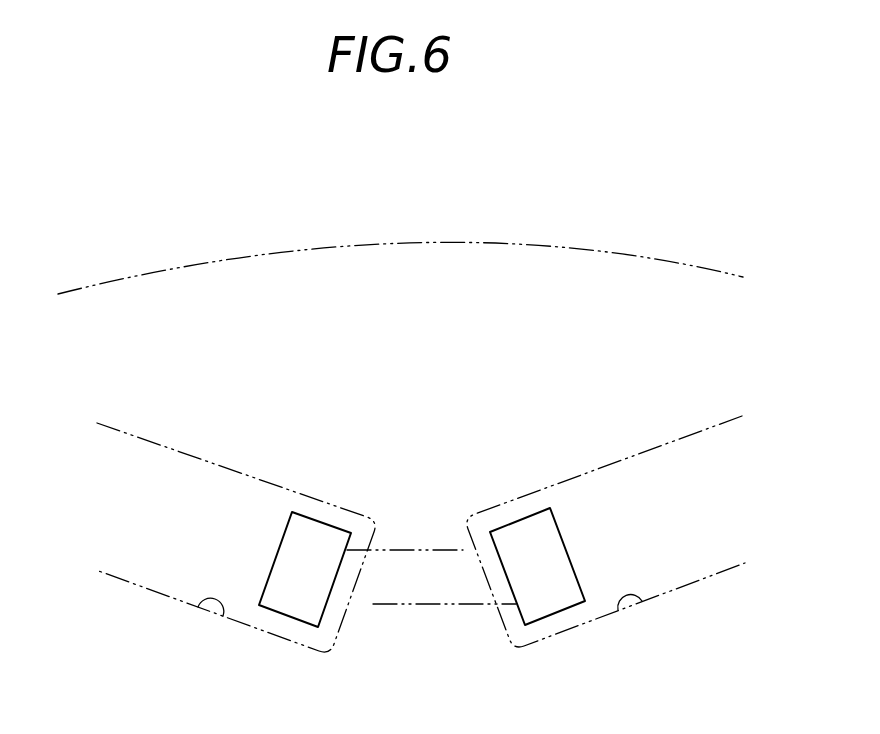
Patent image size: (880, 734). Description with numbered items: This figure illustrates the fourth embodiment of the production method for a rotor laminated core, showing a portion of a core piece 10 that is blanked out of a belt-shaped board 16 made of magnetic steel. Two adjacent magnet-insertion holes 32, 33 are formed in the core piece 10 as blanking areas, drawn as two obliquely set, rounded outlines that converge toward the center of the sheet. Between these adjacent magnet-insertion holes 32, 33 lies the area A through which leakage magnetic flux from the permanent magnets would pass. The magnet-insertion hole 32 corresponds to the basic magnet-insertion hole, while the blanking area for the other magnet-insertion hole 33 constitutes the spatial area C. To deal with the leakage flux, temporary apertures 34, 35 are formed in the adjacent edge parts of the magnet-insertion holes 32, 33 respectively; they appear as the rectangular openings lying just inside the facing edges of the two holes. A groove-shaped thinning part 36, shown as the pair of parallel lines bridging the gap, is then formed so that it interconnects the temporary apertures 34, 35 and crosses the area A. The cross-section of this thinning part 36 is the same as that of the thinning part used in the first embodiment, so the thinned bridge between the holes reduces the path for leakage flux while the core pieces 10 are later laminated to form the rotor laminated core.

The core piece 10 is at (502, 240).
The belt-shaped board 16 is at (323, 225).
The magnet-insertion hole 32 is at (223, 613).
The magnet-insertion hole 33 is at (613, 613).
The temporary aperture 34 is at (320, 545).
The temporary aperture 35 is at (528, 537).
The thinning part 36 is at (415, 560).
The spatial area C is at (552, 498).
The area where leakage flux passes A is at (403, 615).